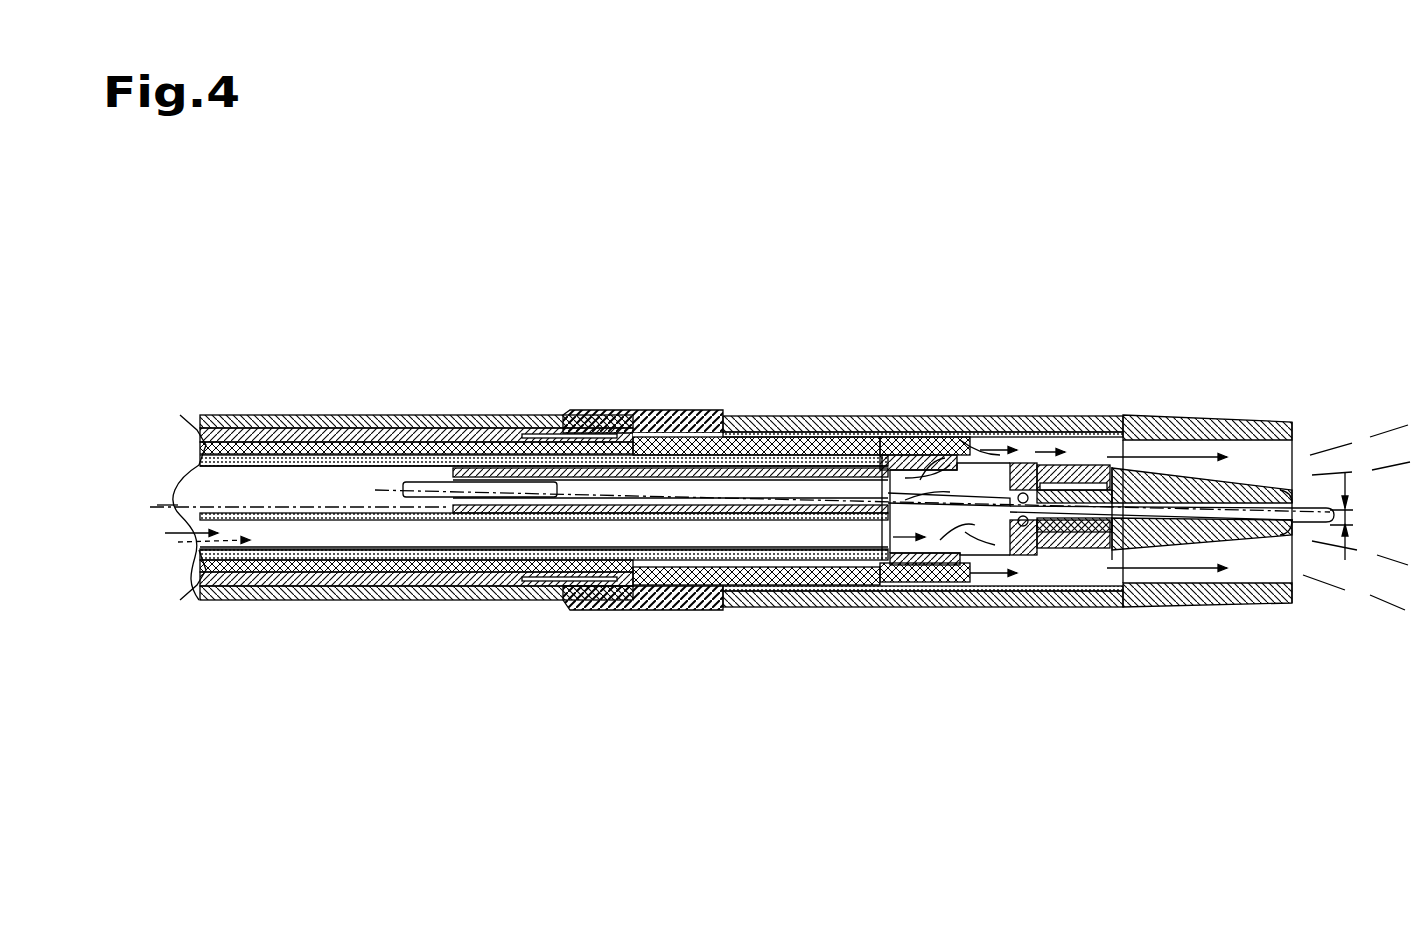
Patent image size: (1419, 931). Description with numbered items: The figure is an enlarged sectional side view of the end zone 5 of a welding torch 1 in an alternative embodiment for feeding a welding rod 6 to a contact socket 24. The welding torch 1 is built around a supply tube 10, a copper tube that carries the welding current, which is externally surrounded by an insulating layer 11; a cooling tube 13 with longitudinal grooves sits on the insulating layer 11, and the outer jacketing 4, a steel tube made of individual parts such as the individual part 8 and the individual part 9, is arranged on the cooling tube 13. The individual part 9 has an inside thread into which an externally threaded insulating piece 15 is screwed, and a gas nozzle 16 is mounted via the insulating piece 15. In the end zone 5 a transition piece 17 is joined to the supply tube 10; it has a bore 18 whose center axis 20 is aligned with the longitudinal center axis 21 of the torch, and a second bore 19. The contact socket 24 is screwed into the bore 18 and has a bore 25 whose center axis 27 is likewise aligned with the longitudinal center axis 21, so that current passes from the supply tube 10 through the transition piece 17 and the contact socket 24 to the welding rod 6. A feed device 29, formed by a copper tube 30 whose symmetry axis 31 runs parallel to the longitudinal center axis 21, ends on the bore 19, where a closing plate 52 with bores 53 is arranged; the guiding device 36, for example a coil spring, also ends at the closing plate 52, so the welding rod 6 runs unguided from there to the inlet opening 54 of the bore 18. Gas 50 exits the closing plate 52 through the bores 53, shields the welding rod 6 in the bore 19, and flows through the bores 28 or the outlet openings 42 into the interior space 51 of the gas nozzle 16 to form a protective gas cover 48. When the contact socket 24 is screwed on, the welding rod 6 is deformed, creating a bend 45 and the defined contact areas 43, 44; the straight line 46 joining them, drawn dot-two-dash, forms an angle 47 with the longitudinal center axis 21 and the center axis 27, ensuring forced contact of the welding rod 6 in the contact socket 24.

The welding torch 1 is at (1164, 169).
The outer jacketing 4 is at (992, 220).
The end zone 5 is at (1280, 215).
The welding rod 6 is at (1296, 498).
The individual part 8 is at (378, 418).
The individual part 9 is at (658, 410).
The supply tube 10 is at (402, 576).
The insulating layer 11 is at (745, 415).
The cooling tube 13 is at (485, 418).
The insulating piece 15 is at (947, 562).
The gas nozzle 16 is at (812, 415).
The transition piece 17 is at (1105, 552).
The bore 18 is at (1010, 556).
The bore 19 is at (935, 415).
The center axis 20 is at (897, 530).
The longitudinal center axis 21 is at (168, 503).
The contact socket 24 is at (1200, 542).
The bore 25 is at (1258, 495).
The center axis 27 is at (1230, 560).
The bores 28 is at (1028, 493).
The feed device 29 is at (295, 418).
The copper tube 30 is at (347, 586).
The symmetry axis 31 is at (557, 478).
The guiding device 36 is at (543, 522).
The outlet openings 42 is at (988, 542).
The contact area 43 is at (1285, 546).
The contact area 44 is at (1062, 480).
The bend 45 is at (940, 455).
The straight line 46 is at (1150, 574).
The angle 47 is at (1340, 572).
The protective gas cover 48 is at (1385, 433).
The gas 50 is at (1152, 415).
The interior space 51 is at (1187, 415).
The closing plate 52 is at (842, 523).
The bores 53 is at (912, 417).
The inlet opening 54 is at (987, 415).